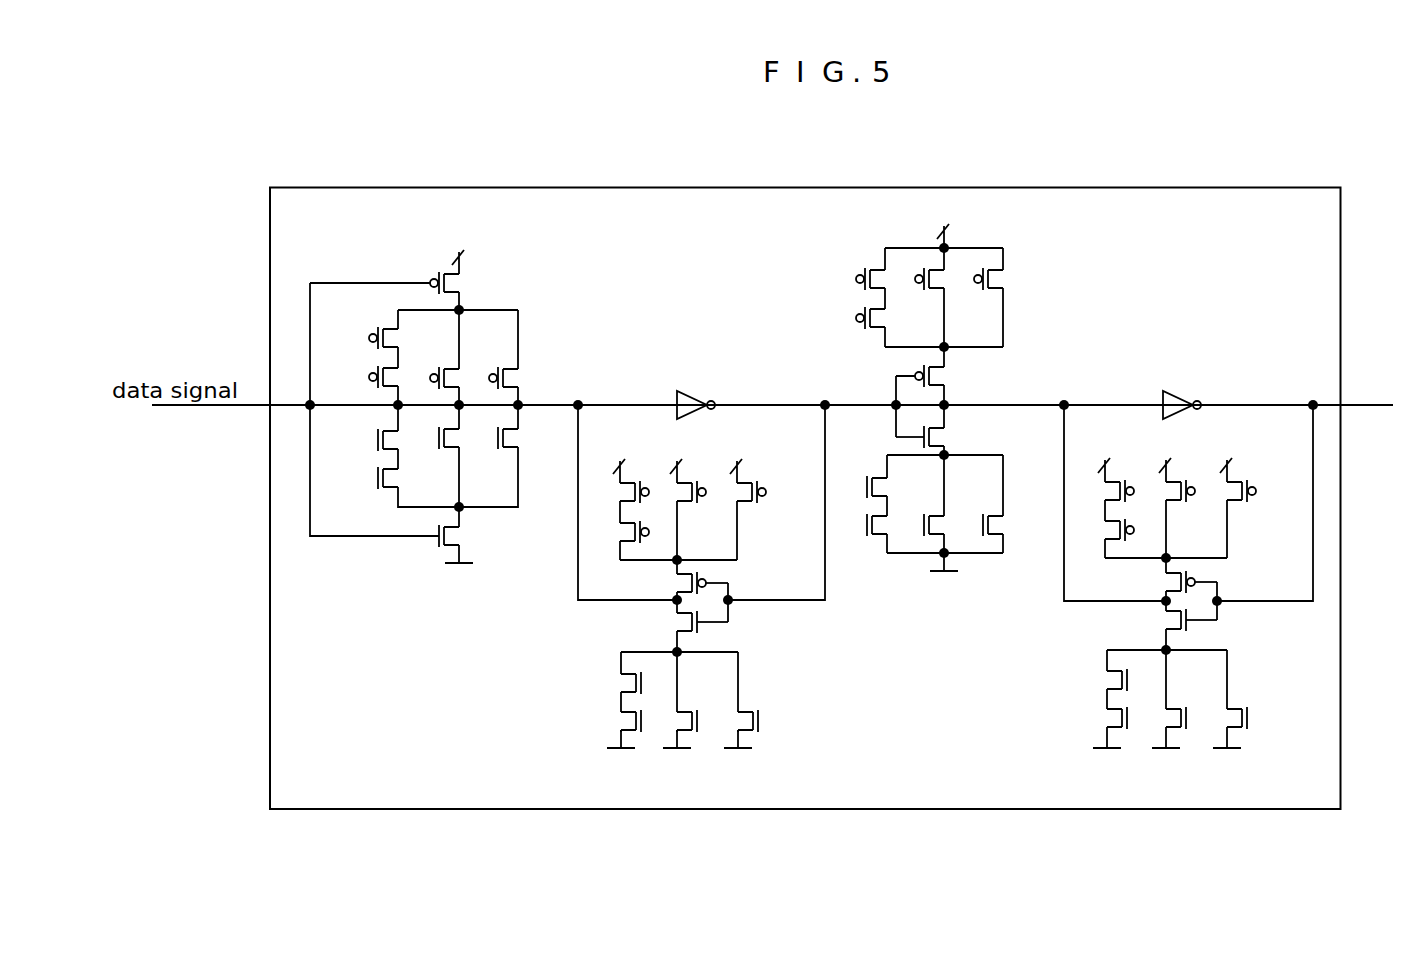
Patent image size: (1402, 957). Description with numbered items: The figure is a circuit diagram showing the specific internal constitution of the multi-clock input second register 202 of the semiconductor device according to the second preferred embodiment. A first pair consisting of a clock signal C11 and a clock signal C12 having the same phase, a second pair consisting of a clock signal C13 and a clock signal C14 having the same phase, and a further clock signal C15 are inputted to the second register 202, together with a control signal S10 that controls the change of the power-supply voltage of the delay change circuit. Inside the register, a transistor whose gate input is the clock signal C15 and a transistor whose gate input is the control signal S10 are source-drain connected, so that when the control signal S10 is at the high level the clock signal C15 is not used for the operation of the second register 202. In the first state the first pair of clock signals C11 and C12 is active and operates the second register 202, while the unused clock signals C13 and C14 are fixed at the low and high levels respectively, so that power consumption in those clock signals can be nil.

The multi-clock input second register 202 is at (786, 182).
The control signal S10 is at (1150, 718).
The clock signal C11 is at (915, 279).
The clock signal C12 is at (1207, 718).
The clock signal C13 is at (990, 299).
The clock signal C14 is at (1267, 718).
The clock signal C15 is at (1150, 680).